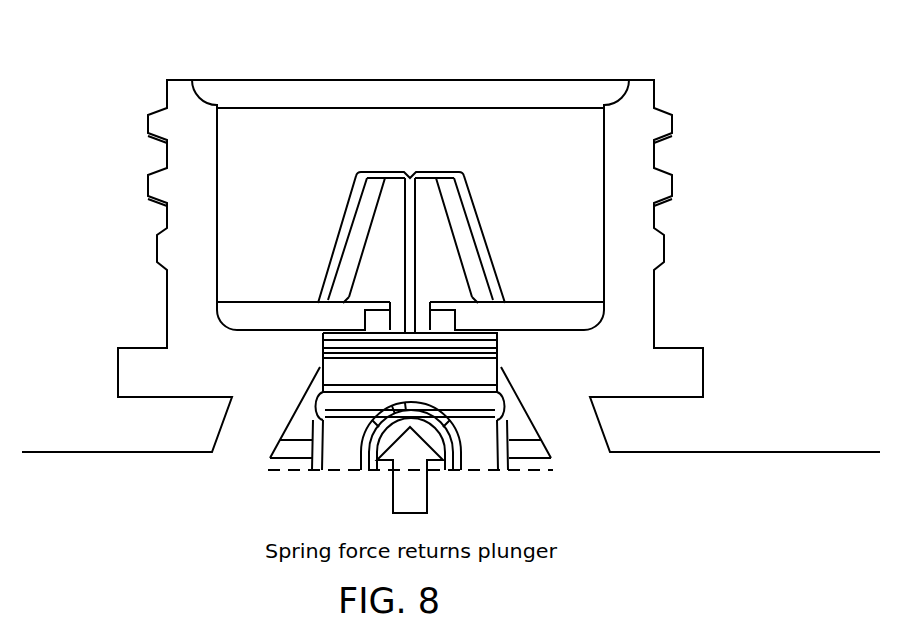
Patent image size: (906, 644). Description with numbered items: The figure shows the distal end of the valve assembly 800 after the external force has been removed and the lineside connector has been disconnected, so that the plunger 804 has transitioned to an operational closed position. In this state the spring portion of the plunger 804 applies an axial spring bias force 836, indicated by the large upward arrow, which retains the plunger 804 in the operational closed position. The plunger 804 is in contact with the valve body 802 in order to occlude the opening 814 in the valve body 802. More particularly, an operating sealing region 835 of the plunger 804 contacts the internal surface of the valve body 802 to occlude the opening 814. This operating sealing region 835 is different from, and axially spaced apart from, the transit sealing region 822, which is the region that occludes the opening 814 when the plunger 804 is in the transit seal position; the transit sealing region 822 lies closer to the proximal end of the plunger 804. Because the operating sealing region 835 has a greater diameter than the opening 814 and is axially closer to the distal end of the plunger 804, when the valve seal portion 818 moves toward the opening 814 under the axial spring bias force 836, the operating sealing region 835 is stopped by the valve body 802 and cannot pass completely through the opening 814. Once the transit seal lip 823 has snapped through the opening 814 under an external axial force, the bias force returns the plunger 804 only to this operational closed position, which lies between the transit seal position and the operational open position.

The valve assembly 800 is at (677, 98).
The valve body 802 is at (657, 157).
The plunger 804 is at (337, 233).
The opening 814 is at (322, 342).
The operating sealing region 835 is at (503, 347).
The valve seal portion 818 is at (502, 372).
The transit seal lip 823 is at (365, 378).
The transit sealing region 822 is at (318, 372).
The axial spring bias force 836 is at (428, 497).